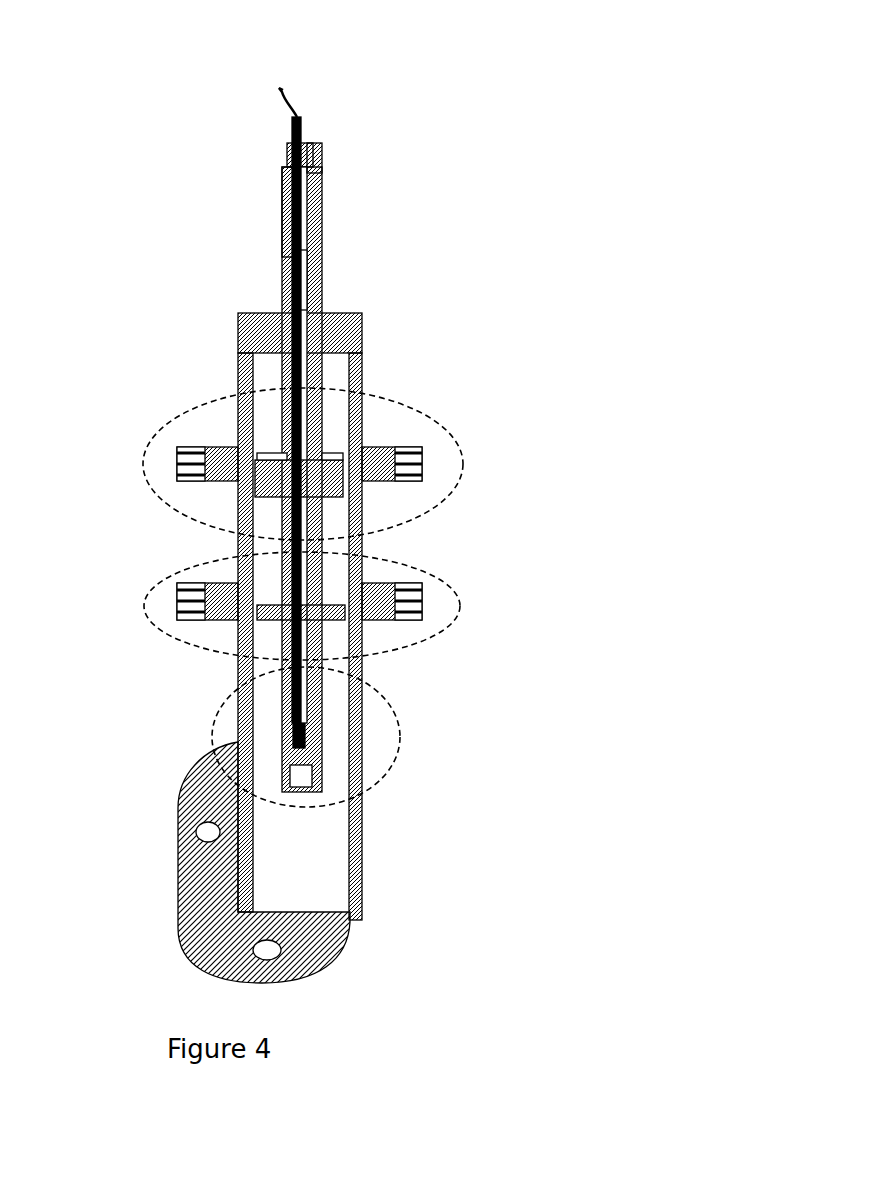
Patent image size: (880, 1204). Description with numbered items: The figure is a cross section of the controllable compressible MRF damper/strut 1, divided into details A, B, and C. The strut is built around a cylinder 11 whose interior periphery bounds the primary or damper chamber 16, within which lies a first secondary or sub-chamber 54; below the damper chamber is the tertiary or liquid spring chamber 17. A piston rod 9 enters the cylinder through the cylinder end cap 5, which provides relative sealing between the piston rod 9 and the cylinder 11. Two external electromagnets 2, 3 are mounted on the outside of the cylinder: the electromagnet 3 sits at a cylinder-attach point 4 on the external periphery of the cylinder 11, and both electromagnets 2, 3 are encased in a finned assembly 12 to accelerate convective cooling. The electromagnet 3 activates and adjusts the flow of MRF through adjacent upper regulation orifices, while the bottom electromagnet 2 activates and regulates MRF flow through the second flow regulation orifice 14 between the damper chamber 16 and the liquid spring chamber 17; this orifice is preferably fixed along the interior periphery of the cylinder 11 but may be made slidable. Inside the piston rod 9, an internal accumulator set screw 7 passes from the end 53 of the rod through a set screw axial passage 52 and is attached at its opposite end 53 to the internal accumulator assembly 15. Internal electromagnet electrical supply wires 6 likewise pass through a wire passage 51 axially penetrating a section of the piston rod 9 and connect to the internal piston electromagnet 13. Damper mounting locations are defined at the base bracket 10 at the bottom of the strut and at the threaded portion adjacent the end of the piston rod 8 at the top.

The compressible MRF damper/strut 1 is at (587, 158).
The bottom electromagnet 2 is at (177, 605).
The electromagnet 3 is at (423, 458).
The cylinder-attach point 4 is at (238, 432).
The cylinder end cap 5 is at (268, 310).
The internal electromagnet electrical supply wires 6 is at (288, 93).
The internal accumulator set screw 7 is at (307, 125).
The end of the piston rod 8 is at (307, 158).
The piston rod 9 is at (322, 213).
The base bracket 10 is at (320, 965).
The cylinder 11 is at (363, 668).
The finned assembly 12 is at (195, 620).
The internal piston electromagnet 13 is at (340, 480).
The second flow regulation orifice 14 is at (280, 620).
The internal accumulator assembly 15 is at (287, 767).
The primary or damper chamber 16 is at (322, 377).
The tertiary or liquid spring chamber 17 is at (327, 852).
The wire passage 51 is at (283, 193).
The set screw axial passage 52 is at (305, 277).
The end of the piston rod / set screw end 53 is at (283, 153).
The first secondary or sub-chamber 54 is at (272, 390).